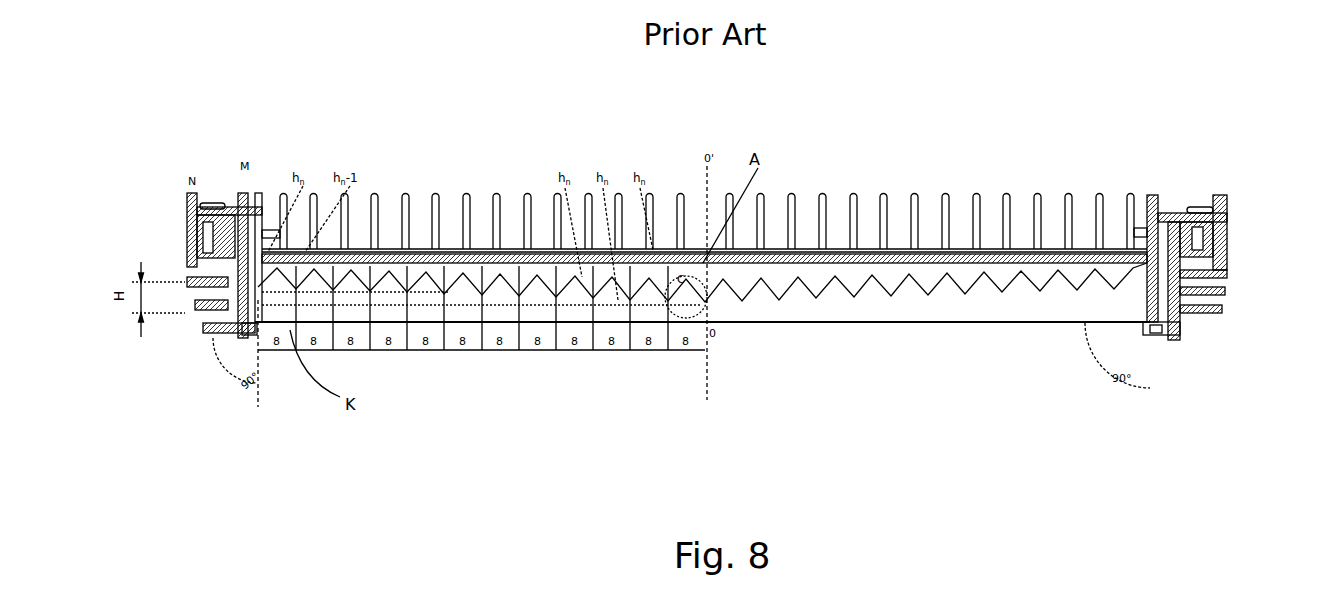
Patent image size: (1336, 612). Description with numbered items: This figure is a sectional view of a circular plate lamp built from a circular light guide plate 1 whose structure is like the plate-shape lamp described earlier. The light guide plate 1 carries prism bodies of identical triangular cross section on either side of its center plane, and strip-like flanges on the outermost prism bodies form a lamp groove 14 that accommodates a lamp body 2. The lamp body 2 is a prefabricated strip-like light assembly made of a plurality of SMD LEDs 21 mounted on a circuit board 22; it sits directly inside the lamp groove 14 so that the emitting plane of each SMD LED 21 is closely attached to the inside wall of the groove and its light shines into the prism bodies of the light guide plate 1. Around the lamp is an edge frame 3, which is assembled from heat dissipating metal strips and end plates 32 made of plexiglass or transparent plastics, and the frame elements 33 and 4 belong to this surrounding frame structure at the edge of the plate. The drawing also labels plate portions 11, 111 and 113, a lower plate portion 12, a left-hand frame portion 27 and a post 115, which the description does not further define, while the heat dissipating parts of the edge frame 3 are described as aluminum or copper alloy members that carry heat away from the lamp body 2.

The light guide plate 1 is at (793, 315).
The heat conducting plate 11 is at (897, 273).
The corrugated sheet 111 is at (1080, 254).
The connecting bar 113 is at (1140, 245).
The bottom plate 12 is at (955, 323).
The lamp groove 14 is at (1150, 247).
The lamp body 2 is at (1178, 228).
The SMD LED 21 is at (1145, 330).
The circuit board 22 is at (1170, 340).
The left side frame 27 is at (200, 290).
The edge frame 3 is at (1228, 270).
The end plate 32 is at (1183, 330).
The frame fin 33 is at (1213, 295).
The end wall 4 is at (1227, 200).
The post 115 is at (225, 338).